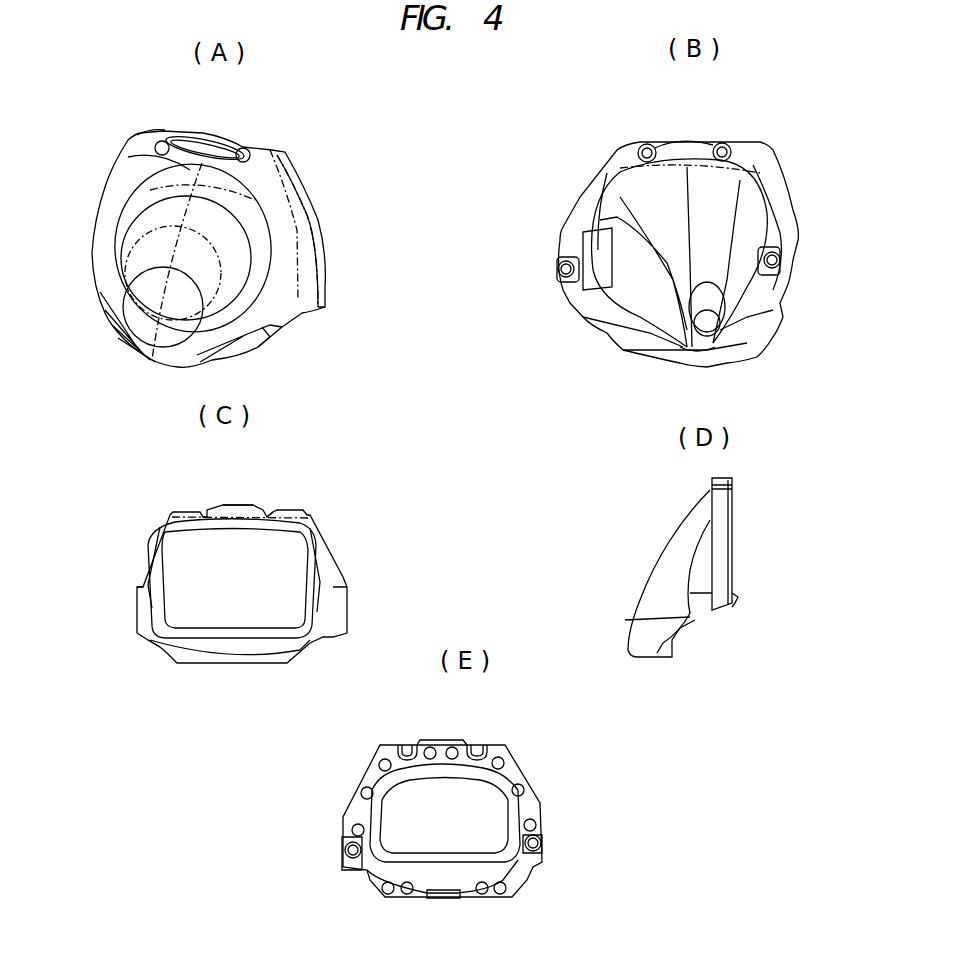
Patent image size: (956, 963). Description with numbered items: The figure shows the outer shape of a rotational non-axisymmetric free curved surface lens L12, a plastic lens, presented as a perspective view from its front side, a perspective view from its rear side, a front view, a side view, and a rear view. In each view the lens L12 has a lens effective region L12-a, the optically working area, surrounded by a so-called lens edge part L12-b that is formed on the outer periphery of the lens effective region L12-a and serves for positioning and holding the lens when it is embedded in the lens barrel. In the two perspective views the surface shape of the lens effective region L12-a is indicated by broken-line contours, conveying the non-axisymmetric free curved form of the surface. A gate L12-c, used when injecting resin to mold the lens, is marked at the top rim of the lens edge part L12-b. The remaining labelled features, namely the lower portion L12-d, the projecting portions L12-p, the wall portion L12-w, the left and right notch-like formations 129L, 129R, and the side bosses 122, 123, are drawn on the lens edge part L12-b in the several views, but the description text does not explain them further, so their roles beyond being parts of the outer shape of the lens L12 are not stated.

The rotational non-axisymmetric free curved surface lens L12 is at (453, 521).
The lens effective region L12-a is at (449, 506).
The lens edge part L12-b is at (490, 551).
The gate L12-c is at (438, 403).
The lower projection of lens L12-d is at (559, 651).
The positioning projection of lens L12-p is at (466, 381).
The wall portion of lens L12-w is at (337, 523).
The left engagement portion 129L is at (459, 415).
The right engagement portion 129R is at (446, 426).
The boss hole 122 is at (544, 579).
The boss hole 123 is at (683, 550).